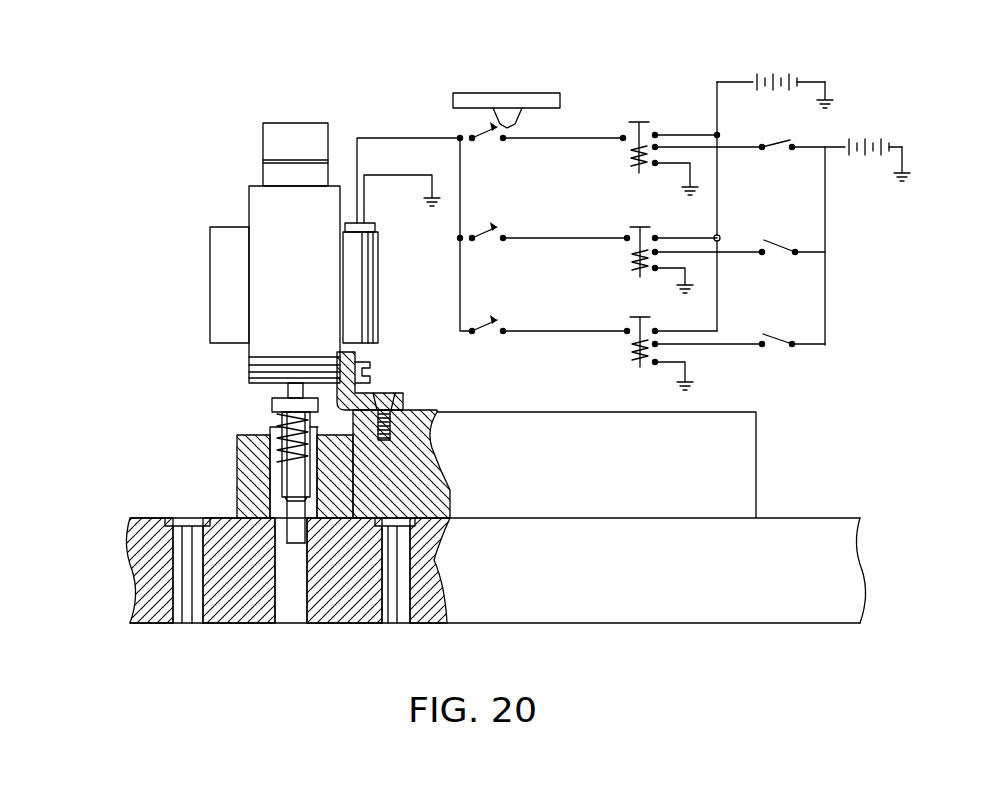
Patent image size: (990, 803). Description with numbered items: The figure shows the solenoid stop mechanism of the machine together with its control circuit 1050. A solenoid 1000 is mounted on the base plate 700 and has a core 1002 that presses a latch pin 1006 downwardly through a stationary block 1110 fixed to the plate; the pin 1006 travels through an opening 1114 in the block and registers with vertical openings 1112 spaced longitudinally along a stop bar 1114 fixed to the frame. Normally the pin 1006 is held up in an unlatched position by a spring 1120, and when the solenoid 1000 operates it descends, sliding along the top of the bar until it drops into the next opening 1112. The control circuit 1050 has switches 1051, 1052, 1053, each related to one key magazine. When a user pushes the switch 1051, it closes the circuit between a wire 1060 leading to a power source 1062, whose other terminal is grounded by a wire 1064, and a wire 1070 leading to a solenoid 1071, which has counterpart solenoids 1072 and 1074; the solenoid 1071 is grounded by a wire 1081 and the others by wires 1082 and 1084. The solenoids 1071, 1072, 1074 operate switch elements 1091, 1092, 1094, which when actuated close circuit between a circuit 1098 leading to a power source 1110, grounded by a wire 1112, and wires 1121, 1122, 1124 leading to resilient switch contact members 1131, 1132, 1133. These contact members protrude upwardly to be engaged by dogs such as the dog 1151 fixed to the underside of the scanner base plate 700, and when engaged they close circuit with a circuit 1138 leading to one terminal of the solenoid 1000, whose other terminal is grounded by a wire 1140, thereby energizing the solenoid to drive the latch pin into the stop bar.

The solenoid 1000 is at (248, 268).
The core 1002 is at (289, 392).
The spring 1120 is at (278, 427).
The latch pin 1006 is at (312, 474).
The stationary block 1110 is at (787, 73).
The stop bar 1114 is at (352, 512).
The vertical openings 1112 is at (828, 92).
The base plate 700 is at (527, 414).
The circuit 1138 is at (460, 226).
The wire 1140 is at (390, 174).
The dog 1151 is at (515, 120).
The resilient switch contact member 1131 is at (494, 143).
The resilient switch contact member 1132 is at (492, 243).
The resilient switch contact member 1133 is at (485, 336).
The wire 1121 is at (549, 130).
The wire 1122 is at (519, 234).
The wire 1124 is at (512, 330).
The switch element 1091 is at (657, 106).
The switch element 1092 is at (631, 229).
The switch element 1094 is at (631, 318).
The solenoid 1071 is at (633, 164).
The solenoid 1072 is at (657, 241).
The solenoid 1074 is at (656, 333).
The wire 1081 is at (695, 185).
The wire 1082 is at (690, 277).
The wire 1084 is at (690, 370).
The circuit 1098 is at (718, 112).
The wire 1070 is at (702, 148).
The wire 1060 is at (812, 152).
The switch 1051 is at (779, 143).
The switch 1052 is at (778, 245).
The switch 1053 is at (773, 339).
The power source 1062 is at (852, 140).
The wire 1064 is at (906, 162).
The control circuit 1050 is at (827, 331).